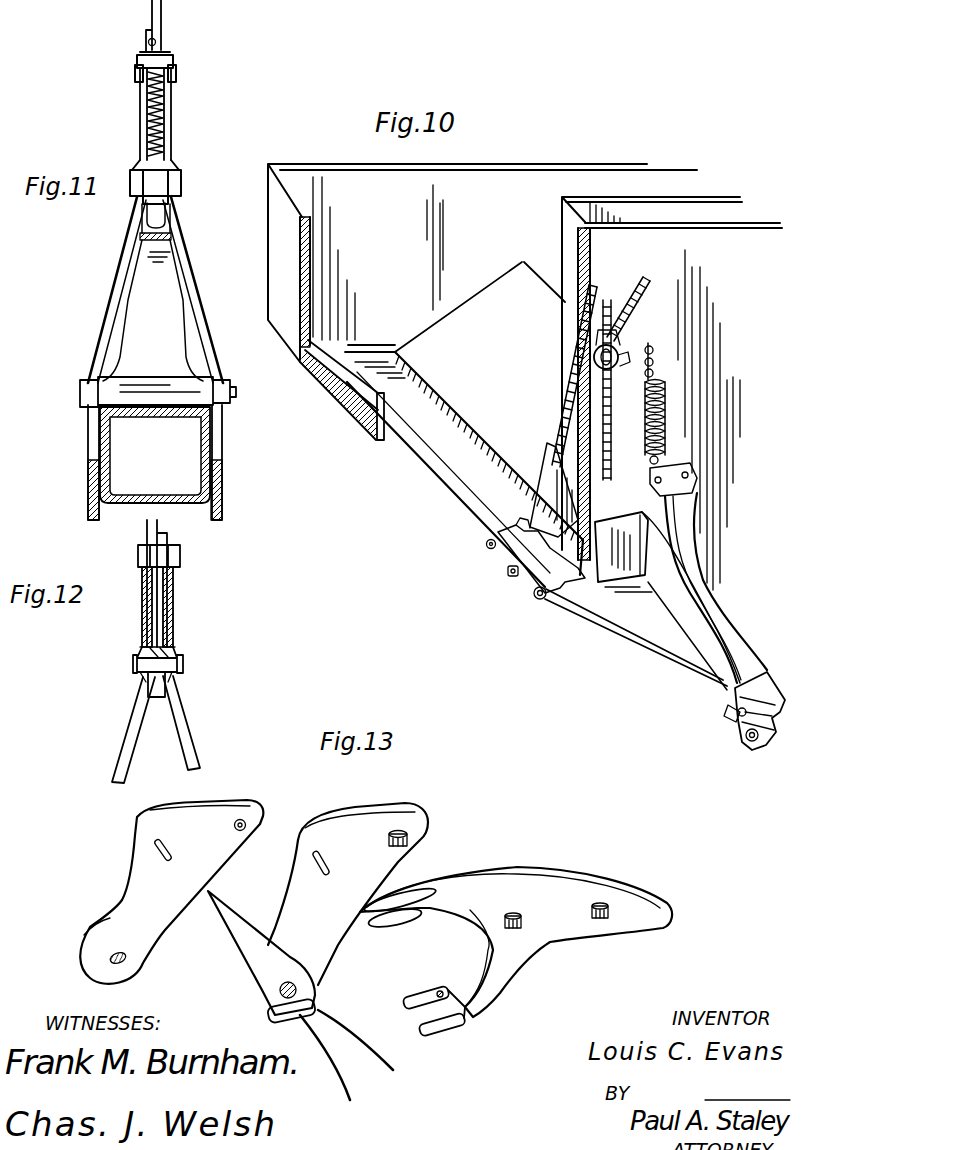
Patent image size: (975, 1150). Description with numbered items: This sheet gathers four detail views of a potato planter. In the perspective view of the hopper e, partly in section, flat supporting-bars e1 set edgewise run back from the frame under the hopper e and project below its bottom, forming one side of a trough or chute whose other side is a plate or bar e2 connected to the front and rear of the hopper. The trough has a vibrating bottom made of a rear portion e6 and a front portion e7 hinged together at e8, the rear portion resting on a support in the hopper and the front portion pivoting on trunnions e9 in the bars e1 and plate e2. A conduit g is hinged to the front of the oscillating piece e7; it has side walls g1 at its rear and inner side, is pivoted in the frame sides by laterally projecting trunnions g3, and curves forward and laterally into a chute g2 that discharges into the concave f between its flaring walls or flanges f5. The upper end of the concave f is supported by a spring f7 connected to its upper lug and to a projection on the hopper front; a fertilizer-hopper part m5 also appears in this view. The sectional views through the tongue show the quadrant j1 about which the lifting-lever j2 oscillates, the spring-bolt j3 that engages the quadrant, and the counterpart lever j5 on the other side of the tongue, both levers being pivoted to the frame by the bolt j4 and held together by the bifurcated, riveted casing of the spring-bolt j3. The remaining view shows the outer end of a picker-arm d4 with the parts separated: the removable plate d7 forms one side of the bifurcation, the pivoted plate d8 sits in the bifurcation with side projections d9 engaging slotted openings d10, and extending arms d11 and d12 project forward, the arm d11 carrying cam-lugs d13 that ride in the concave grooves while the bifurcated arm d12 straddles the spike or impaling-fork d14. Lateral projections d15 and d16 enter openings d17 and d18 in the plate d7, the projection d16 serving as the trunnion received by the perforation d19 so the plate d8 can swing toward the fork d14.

In FIG. 11, the quadrant j1 is at (155, 262).
In FIG. 11, the lifting-lever j2 is at (158, 7).
In FIG. 12, the lifting-lever j2 is at (148, 533).
In FIG. 11, the spring-bolt j3 is at (145, 118).
In FIG. 12, the spring-bolt j3 is at (147, 684).
In FIG. 11, the pivot bolt j4 is at (232, 394).
In FIG. 11, the counterpart lever j5 is at (116, 297).
In FIG. 12, the counterpart lever j5 is at (181, 712).
In FIG. 10, the hopper e is at (525, 377).
In FIG. 10, the supporting-bars e1 is at (376, 420).
In FIG. 10, the plate or bar e2 is at (510, 470).
In FIG. 10, the rear portion of vibrating bottom e6 is at (465, 469).
In FIG. 10, the front portion of vibrating bottom e7 is at (541, 555).
In FIG. 10, the hinge e8 is at (486, 546).
In FIG. 10, the trunnions e9 is at (510, 576).
In FIG. 10, the conduit g is at (630, 636).
In FIG. 10, the side walls g1 is at (667, 601).
In FIG. 10, the chute g2 is at (750, 688).
In FIG. 10, the trunnions g3 is at (730, 718).
In FIG. 10, the rack and wheel m5 is at (567, 390).
In FIG. 10, the concave f is at (713, 613).
In FIG. 10, the flaring walls or flanges f5 is at (770, 706).
In FIG. 10, the spring f7 is at (665, 400).
In FIG. 13, the picker-arm d4 is at (346, 1055).
In FIG. 13, the removable plate d7 is at (155, 893).
In FIG. 13, the pivoted plate d8 is at (516, 942).
In FIG. 13, the projections d9 is at (512, 914).
In FIG. 13, the slotted openings d10 is at (155, 838).
In FIG. 13, the extending arm d11 is at (432, 988).
In FIG. 13, the bifurcated extending arm d12 is at (475, 1012).
In FIG. 13, the cam-lugs d13 is at (440, 838).
In FIG. 13, the spike or impaling-fork d14 is at (235, 935).
In FIG. 13, the projection d15 is at (280, 992).
In FIG. 13, the trunnion projection d16 is at (410, 828).
In FIG. 13, the opening d17 is at (118, 965).
In FIG. 13, the opening d18 is at (246, 821).
In FIG. 13, the perforation d19 is at (603, 906).